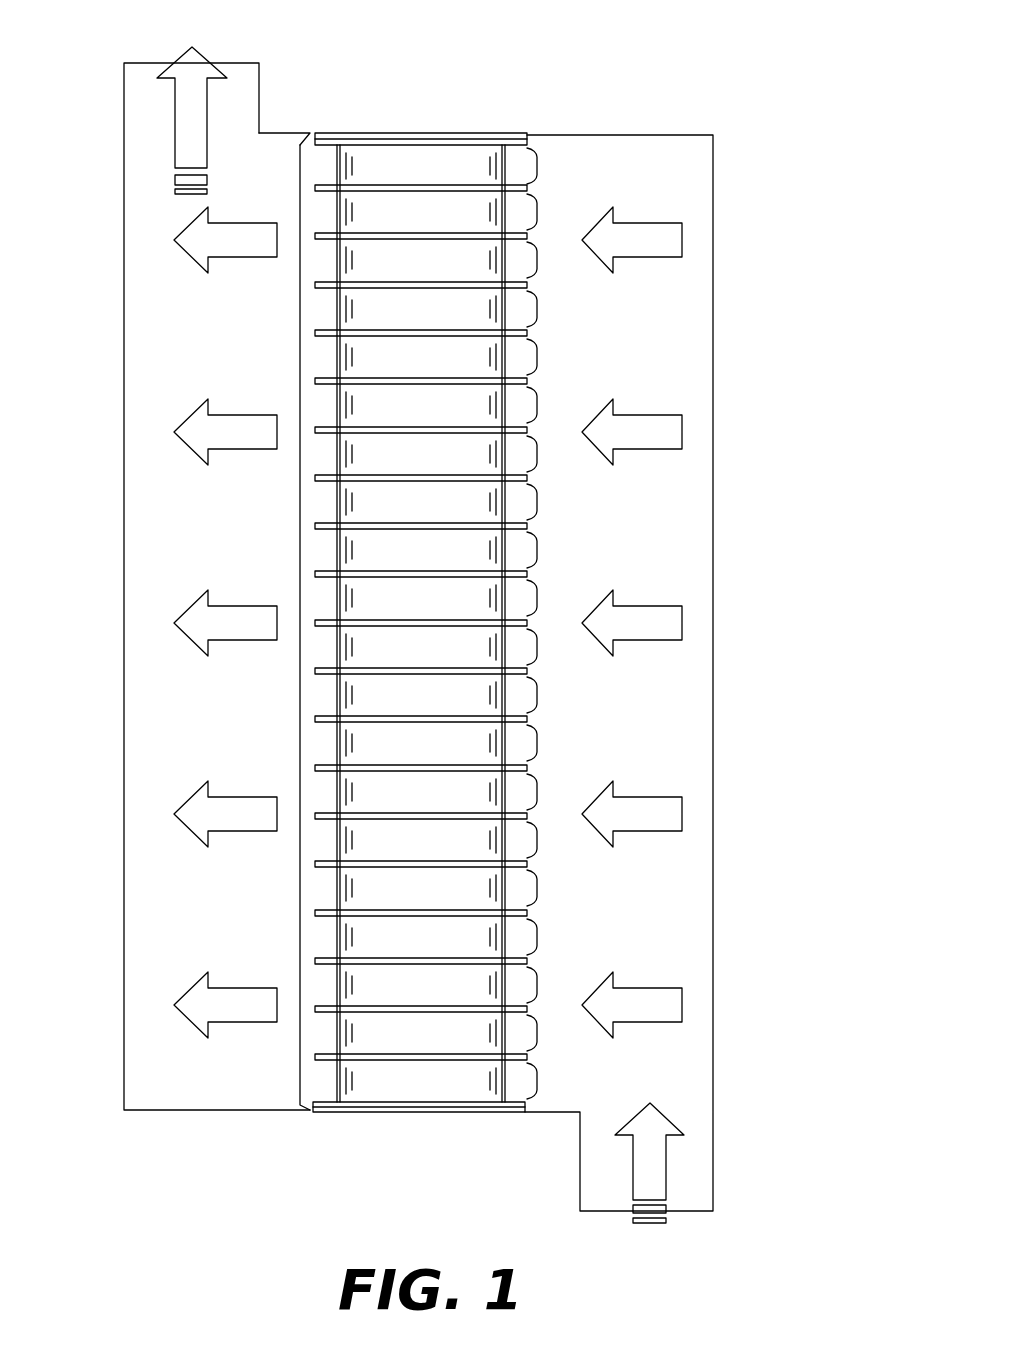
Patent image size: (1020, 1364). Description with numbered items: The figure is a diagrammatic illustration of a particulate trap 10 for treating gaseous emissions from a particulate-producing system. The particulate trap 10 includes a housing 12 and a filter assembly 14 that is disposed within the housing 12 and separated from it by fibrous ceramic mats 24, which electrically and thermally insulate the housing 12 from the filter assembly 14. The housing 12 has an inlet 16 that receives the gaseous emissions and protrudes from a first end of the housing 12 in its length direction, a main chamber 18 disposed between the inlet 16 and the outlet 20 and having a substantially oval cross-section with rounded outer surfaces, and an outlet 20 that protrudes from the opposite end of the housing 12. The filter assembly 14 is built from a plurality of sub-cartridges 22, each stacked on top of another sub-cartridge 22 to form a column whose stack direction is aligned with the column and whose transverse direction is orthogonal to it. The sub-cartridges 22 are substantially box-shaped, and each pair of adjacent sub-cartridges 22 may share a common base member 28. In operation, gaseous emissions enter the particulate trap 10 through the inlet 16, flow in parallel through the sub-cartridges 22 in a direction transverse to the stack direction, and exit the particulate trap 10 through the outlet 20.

The particulate trap 10 is at (775, 243).
The housing 12 is at (713, 577).
The filter assembly 14 is at (300, 535).
The inlet 16 is at (700, 1212).
The main chamber 18 is at (148, 917).
The outlet 20 is at (248, 67).
The sub-cartridge 22 is at (537, 168).
The fibrous ceramic mat 24 is at (537, 137).
The base member 28 is at (315, 1100).